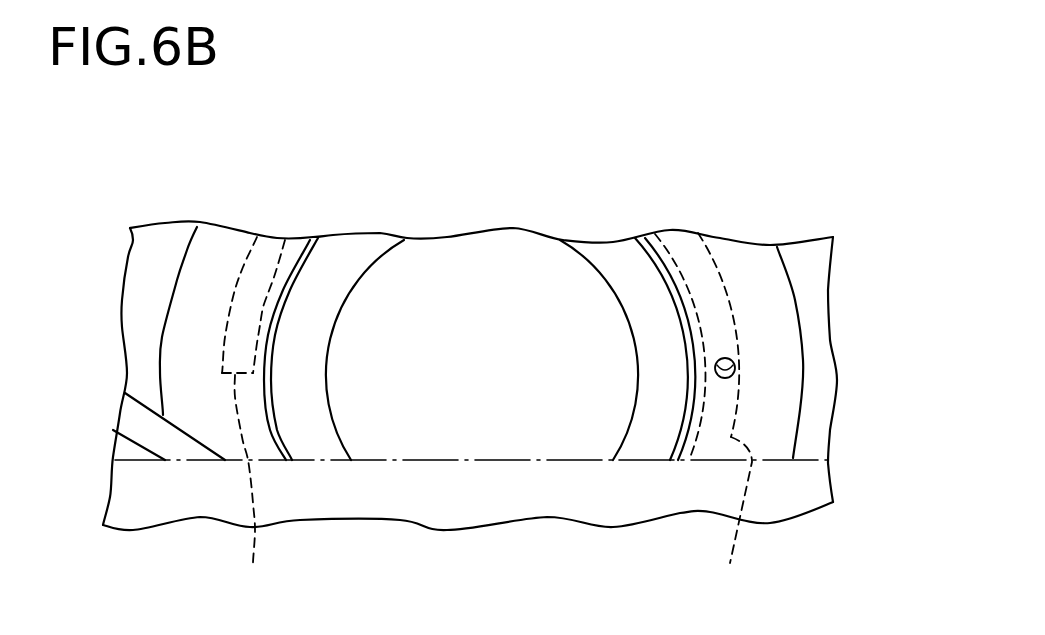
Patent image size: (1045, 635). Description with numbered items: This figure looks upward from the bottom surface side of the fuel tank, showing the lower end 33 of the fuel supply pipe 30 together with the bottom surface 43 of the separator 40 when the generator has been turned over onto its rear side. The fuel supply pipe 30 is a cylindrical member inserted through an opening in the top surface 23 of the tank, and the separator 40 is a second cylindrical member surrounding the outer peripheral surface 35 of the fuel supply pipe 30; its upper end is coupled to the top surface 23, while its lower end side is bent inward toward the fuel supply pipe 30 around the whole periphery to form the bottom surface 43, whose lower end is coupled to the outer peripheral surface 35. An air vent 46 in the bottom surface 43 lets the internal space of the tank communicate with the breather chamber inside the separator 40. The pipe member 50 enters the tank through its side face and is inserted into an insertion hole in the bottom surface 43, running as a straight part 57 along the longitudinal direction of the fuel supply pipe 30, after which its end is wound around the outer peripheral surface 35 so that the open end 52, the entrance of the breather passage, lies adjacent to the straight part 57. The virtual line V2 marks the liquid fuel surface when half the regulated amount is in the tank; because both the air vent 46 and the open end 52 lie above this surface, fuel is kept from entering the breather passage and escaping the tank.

The top surface 23 is at (147, 267).
The separator 40 is at (177, 267).
The bottom surface 43 is at (217, 265).
The outer peripheral surface 35 is at (307, 253).
The lower end 33 is at (338, 260).
The fuel supply pipe 30 is at (600, 275).
The air vent 46 is at (727, 358).
The pipe member 50 is at (732, 516).
The open end 52 is at (251, 485).
The straight part 57 is at (143, 425).
The virtual line V2 is at (806, 460).